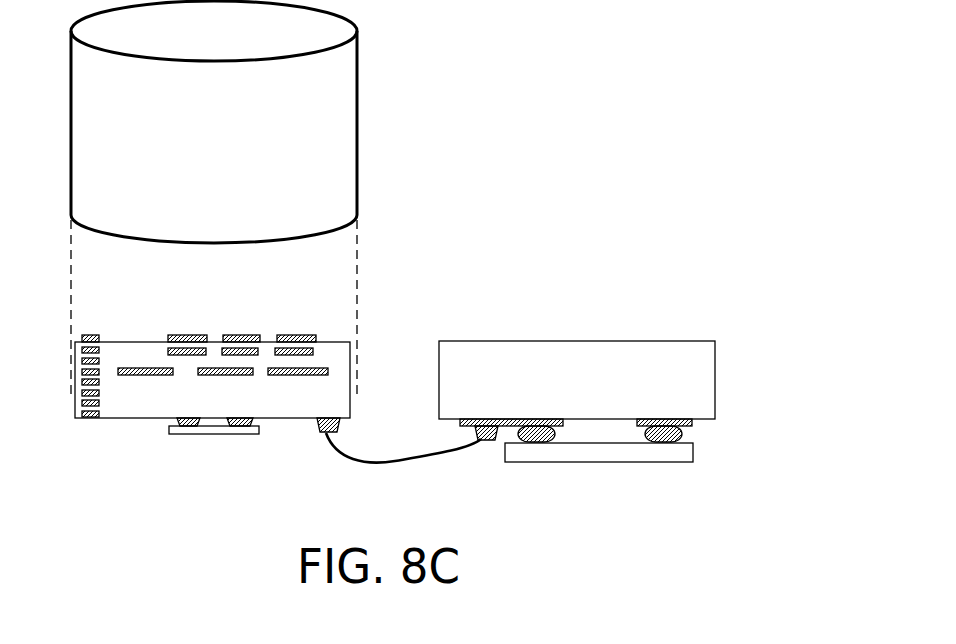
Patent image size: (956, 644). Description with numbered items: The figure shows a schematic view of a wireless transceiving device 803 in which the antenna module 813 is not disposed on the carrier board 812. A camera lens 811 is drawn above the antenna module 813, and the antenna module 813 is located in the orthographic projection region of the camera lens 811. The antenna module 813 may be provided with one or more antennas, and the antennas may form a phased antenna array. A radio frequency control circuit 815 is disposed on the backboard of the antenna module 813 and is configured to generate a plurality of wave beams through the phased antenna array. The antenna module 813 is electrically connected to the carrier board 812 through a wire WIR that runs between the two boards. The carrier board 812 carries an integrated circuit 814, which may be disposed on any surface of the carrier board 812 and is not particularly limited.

The wireless transceiving device 803 is at (805, 520).
The camera lens 811 is at (358, 119).
The carrier board 812 is at (580, 340).
The antenna module 813 is at (140, 340).
The integrated circuit 814 is at (694, 452).
The radio frequency control circuit 815 is at (210, 437).
The wire WIR is at (425, 465).